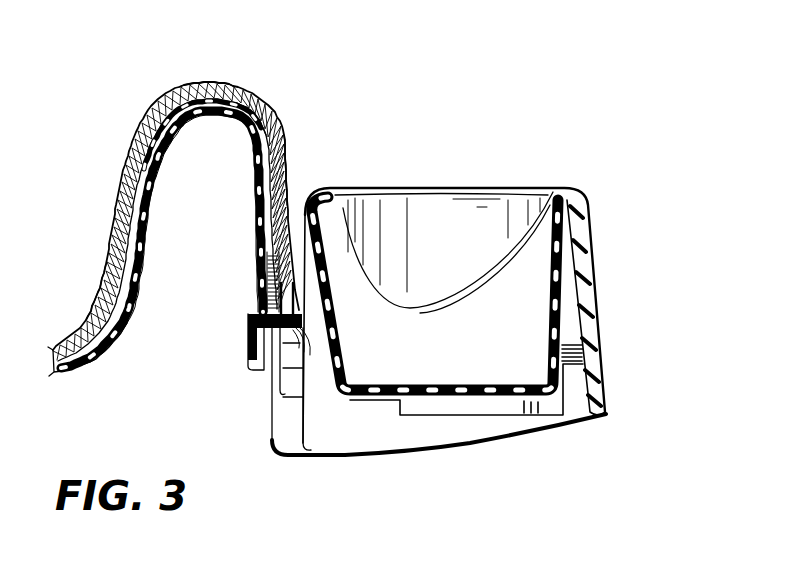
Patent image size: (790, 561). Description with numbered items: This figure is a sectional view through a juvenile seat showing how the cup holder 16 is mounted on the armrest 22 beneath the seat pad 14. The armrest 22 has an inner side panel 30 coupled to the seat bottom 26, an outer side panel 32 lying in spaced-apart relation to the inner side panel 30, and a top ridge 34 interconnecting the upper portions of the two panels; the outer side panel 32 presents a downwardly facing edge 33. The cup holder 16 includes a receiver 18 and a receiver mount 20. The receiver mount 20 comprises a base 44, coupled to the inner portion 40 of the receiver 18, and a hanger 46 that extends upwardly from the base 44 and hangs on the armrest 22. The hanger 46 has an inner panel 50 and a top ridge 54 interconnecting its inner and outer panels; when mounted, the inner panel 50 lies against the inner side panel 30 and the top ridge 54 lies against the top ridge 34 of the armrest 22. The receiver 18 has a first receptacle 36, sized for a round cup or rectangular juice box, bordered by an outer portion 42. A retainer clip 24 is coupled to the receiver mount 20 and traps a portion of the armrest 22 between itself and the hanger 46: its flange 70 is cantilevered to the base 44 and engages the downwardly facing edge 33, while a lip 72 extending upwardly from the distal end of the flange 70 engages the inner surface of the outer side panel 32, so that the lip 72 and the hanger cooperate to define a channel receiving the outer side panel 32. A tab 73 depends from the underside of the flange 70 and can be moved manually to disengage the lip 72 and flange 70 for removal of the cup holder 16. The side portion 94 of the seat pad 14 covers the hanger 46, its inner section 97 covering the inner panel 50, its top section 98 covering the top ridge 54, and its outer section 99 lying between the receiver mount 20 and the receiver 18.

The seat pad 14 is at (108, 212).
The cup holder 16 is at (549, 160).
The receiver 18 is at (596, 238).
The receiver mount 20 is at (181, 95).
The armrest 22 is at (137, 322).
The retainer clip 24 is at (241, 398).
The seat bottom 26 is at (67, 368).
The inner side panel 30 is at (152, 205).
The outer side panel 32 is at (258, 228).
The downwardly facing edge 33 is at (255, 362).
The top ridge 34 is at (160, 243).
The first receptacle 36 is at (443, 220).
The inner portion 40 is at (307, 278).
The outer portion 42 is at (597, 308).
The base 44 is at (303, 334).
The hanger 46 is at (150, 133).
The inner panel 50 is at (140, 147).
The top ridge 54 is at (205, 140).
The flange 70 is at (271, 400).
The lip 72 is at (253, 316).
The tab 73 is at (253, 360).
The side portion 94 is at (260, 87).
The inner section 97 is at (100, 283).
The top section 98 is at (227, 85).
The outer section 99 is at (284, 152).